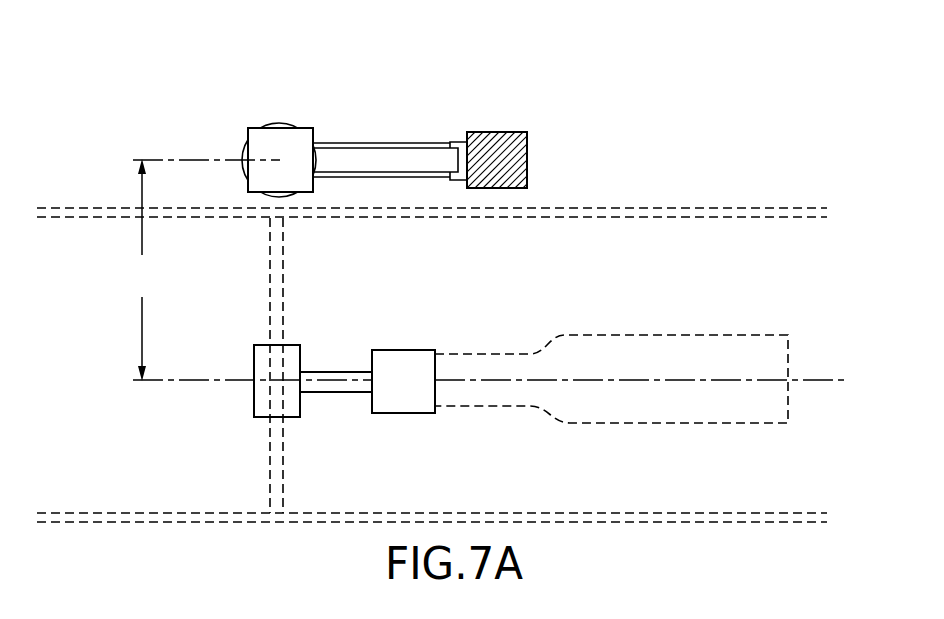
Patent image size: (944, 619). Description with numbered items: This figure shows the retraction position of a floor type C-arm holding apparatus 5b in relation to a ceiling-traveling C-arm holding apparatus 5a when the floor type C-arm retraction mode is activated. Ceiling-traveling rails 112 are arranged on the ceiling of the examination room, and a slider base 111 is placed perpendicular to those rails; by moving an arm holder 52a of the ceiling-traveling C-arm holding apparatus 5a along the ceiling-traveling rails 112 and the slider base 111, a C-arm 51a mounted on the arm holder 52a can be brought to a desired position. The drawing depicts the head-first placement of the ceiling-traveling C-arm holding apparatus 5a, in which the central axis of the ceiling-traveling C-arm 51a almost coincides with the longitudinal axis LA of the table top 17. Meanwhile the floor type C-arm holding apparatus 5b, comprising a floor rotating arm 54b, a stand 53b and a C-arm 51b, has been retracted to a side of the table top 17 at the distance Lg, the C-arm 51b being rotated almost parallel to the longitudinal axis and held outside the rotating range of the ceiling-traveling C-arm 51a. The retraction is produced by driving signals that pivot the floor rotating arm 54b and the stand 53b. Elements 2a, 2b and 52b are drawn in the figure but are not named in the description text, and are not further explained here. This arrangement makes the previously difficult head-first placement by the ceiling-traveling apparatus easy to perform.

The floor type C-arm holding apparatus 5b is at (356, 105).
The floor rotating arm 54b is at (283, 123).
The light emitting element 2b is at (257, 139).
The C-arm 51b is at (389, 143).
The terminal 52b is at (453, 142).
The stand 53b is at (498, 132).
The ceiling-traveling rails 112 is at (646, 207).
The slider base 111 is at (270, 266).
The ceiling-traveling C-arm holding apparatus 5a is at (355, 357).
The arm holder 52a is at (294, 418).
The C-arm 51a is at (326, 372).
The light emitting element 2a is at (397, 407).
The table top 17 is at (683, 335).
The distance Lg is at (144, 270).
The optical axis LA is at (505, 382).